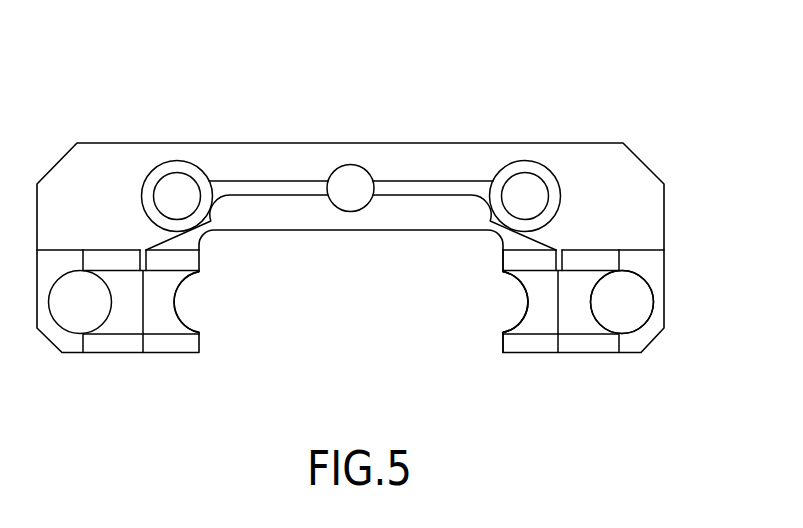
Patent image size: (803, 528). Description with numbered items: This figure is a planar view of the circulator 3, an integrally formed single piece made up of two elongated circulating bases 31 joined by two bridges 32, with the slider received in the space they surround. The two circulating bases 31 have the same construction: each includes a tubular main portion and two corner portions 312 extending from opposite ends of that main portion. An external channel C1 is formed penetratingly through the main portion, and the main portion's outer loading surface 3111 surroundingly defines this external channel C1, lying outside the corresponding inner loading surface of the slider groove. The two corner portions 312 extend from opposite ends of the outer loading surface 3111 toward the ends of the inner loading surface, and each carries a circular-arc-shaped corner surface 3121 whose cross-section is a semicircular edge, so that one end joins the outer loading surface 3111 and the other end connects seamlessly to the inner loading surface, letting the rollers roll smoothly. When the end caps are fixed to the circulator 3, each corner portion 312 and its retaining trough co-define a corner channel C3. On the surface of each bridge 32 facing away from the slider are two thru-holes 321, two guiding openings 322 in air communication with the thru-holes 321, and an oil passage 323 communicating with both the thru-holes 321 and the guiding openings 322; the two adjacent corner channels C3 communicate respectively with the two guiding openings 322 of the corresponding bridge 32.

The circulator 3 is at (660, 52).
The circulating base 31 is at (632, 368).
The outer loading surface 3111 is at (641, 279).
The corner portion 312 is at (405, 284).
The corner surface 3121 is at (515, 307).
The bridge 32 is at (247, 128).
The thru-hole 321 is at (180, 172).
The guiding opening 322 is at (148, 233).
The oil passage 323 is at (304, 174).
The external channel C1 is at (655, 307).
The corner channel C3 is at (180, 310).